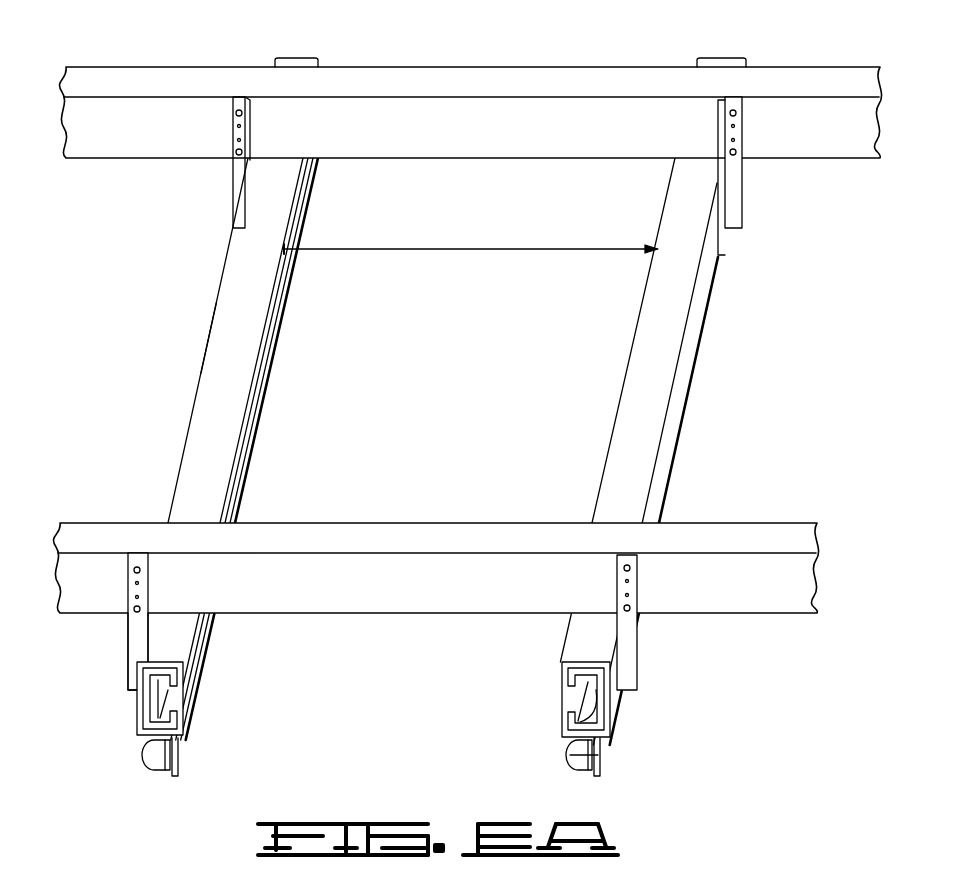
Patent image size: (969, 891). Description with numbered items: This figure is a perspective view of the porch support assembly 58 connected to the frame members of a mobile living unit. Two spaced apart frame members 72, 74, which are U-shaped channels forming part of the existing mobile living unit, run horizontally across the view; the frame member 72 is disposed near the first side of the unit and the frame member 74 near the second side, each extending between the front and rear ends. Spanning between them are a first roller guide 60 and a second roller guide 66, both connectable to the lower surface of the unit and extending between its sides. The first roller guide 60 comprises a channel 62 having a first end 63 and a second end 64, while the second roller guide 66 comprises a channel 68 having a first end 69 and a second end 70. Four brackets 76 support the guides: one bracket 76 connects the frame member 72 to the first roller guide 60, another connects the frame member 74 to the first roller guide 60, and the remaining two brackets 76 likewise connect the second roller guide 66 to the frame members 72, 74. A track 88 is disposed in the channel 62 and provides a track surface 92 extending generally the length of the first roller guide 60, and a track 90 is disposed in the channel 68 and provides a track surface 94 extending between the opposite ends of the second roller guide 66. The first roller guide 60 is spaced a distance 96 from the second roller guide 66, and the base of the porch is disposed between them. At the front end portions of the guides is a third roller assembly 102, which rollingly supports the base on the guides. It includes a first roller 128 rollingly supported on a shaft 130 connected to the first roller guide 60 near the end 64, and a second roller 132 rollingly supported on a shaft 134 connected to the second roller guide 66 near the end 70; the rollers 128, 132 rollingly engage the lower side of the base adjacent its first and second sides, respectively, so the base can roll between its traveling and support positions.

The porch support assembly 58 is at (205, 333).
The first roller guide 60 is at (702, 305).
The channel 62 is at (597, 451).
The first end 63 is at (722, 58).
The second end 64 is at (576, 776).
The second roller guide 66 is at (222, 262).
The channel 68 is at (188, 430).
The first end 69 is at (297, 58).
The second end 70 is at (135, 668).
The frame member 72 is at (403, 118).
The frame member 74 is at (333, 575).
The bracket 76 is at (236, 121).
The track 88 is at (578, 720).
The track 90 is at (152, 698).
The track surface 92 is at (568, 705).
The track surface 94 is at (165, 718).
The distance 96 is at (443, 250).
The third roller assembly 102 is at (565, 740).
The first roller 128 is at (578, 775).
The shaft 130 is at (598, 760).
The second roller 132 is at (152, 773).
The shaft 134 is at (172, 762).